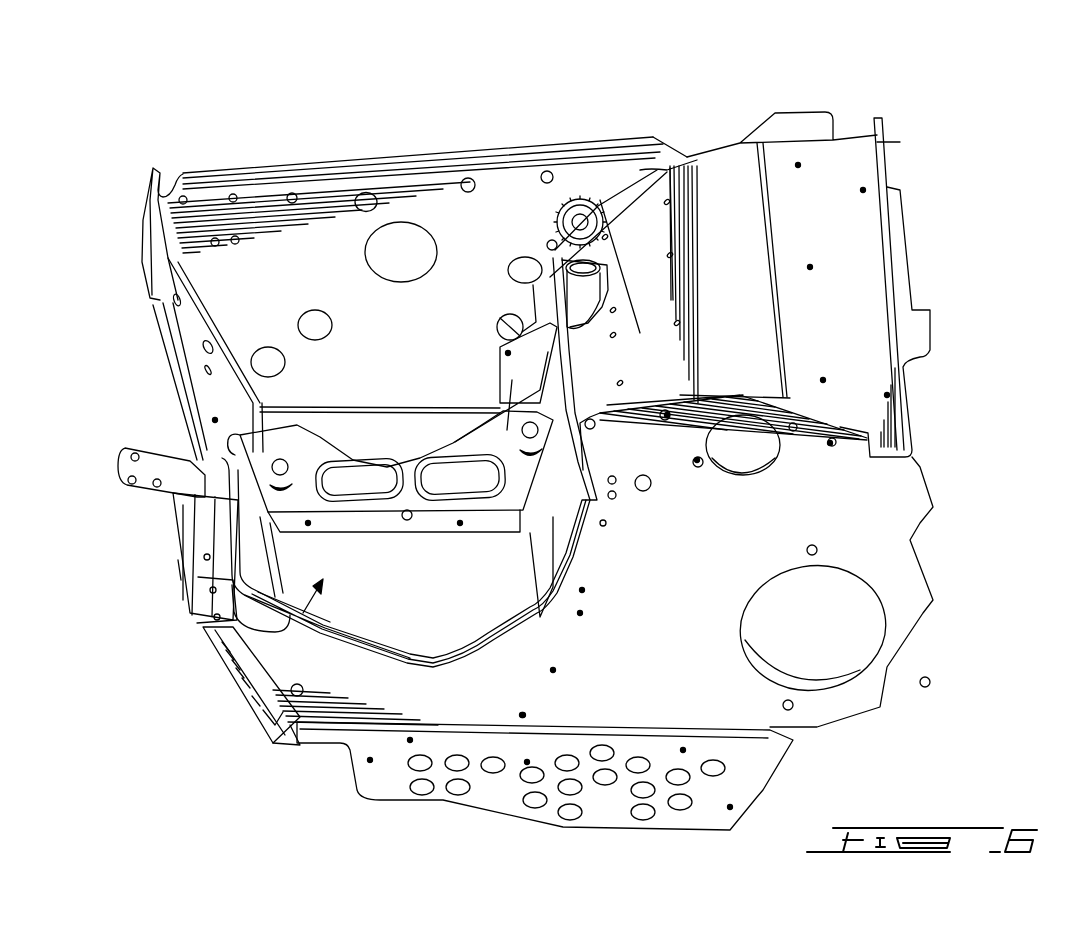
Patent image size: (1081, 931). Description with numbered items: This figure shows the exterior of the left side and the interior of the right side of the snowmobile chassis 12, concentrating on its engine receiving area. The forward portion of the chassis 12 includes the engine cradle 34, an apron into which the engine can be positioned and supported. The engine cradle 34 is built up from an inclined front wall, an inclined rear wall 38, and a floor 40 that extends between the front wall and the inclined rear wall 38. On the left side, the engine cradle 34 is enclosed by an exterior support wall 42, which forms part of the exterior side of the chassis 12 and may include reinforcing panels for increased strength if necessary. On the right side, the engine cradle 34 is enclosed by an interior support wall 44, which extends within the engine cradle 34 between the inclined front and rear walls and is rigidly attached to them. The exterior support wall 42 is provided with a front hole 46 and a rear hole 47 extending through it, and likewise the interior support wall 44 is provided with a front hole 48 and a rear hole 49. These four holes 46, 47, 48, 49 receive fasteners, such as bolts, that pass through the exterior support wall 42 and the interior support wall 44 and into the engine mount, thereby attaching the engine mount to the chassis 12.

The snowmobile chassis 12 is at (887, 517).
The engine cradle 34 is at (225, 638).
The inclined rear wall 38 is at (580, 222).
The floor 40 is at (390, 625).
The exterior support wall 42 is at (430, 705).
The interior support wall 44 is at (400, 457).
The front hole 46 is at (275, 693).
The rear hole 47 is at (560, 645).
The front hole 48 is at (272, 462).
The rear hole 49 is at (528, 423).